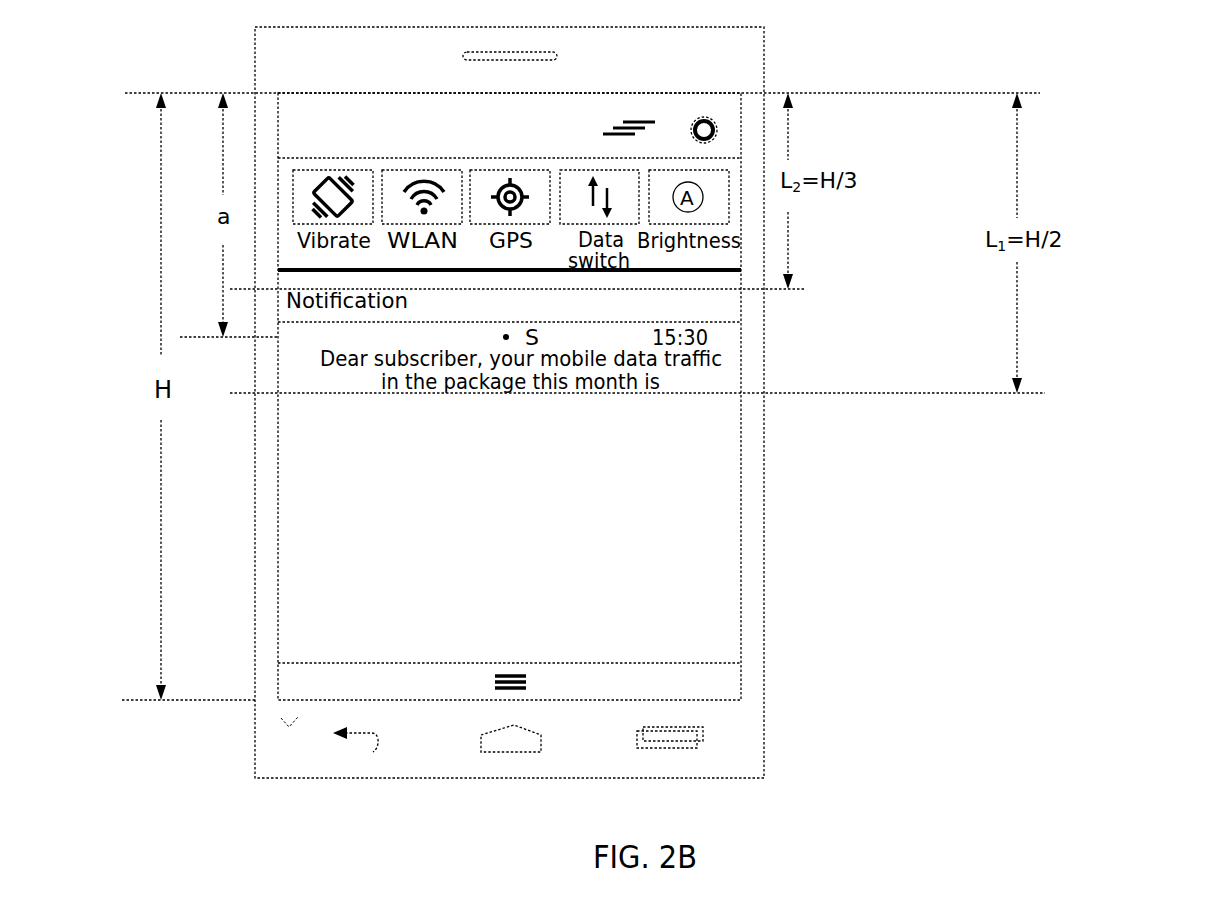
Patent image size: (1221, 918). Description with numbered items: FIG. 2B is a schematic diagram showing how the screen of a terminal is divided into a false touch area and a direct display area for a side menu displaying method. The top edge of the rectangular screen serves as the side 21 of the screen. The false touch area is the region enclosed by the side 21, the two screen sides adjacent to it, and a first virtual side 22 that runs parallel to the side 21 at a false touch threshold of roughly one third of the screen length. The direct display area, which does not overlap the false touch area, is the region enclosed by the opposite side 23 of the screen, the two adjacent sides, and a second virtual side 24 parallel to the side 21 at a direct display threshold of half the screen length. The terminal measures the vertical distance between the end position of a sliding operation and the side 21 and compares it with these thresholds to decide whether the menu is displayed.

The side of the screen 21 is at (628, 93).
The first virtual side 22 is at (617, 285).
The opposite side of the side of the screen 23 is at (595, 700).
The second virtual side 24 is at (706, 387).